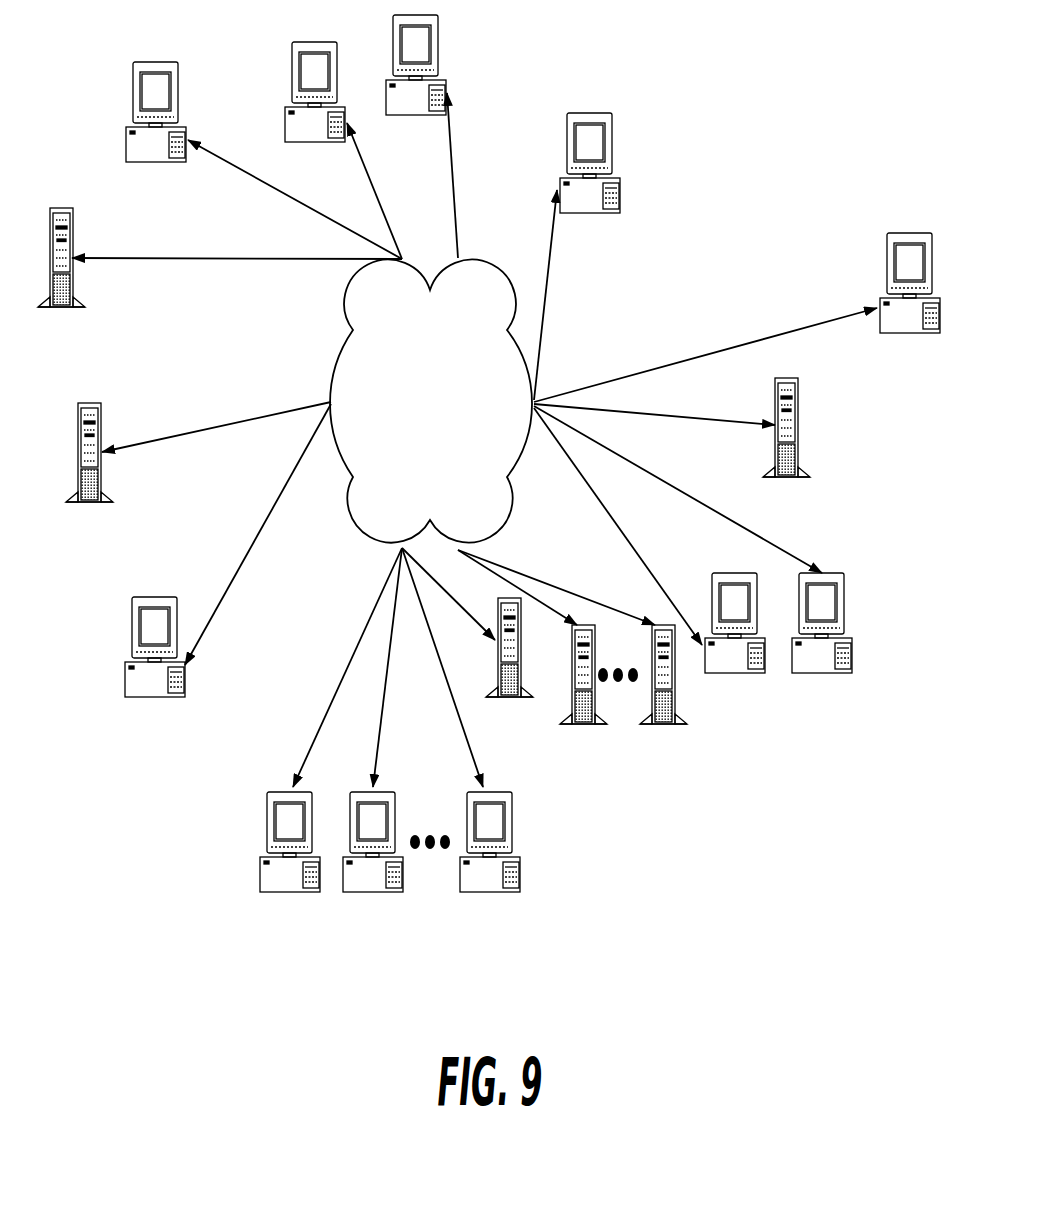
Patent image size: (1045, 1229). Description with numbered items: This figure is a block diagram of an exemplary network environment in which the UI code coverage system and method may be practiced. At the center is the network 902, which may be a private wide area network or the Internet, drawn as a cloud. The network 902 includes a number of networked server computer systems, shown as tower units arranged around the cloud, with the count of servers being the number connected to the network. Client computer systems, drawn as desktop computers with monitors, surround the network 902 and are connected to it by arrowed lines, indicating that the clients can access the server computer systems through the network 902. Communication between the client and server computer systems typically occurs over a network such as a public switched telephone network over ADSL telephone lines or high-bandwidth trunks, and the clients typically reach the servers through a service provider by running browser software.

The network 902 is at (431, 400).